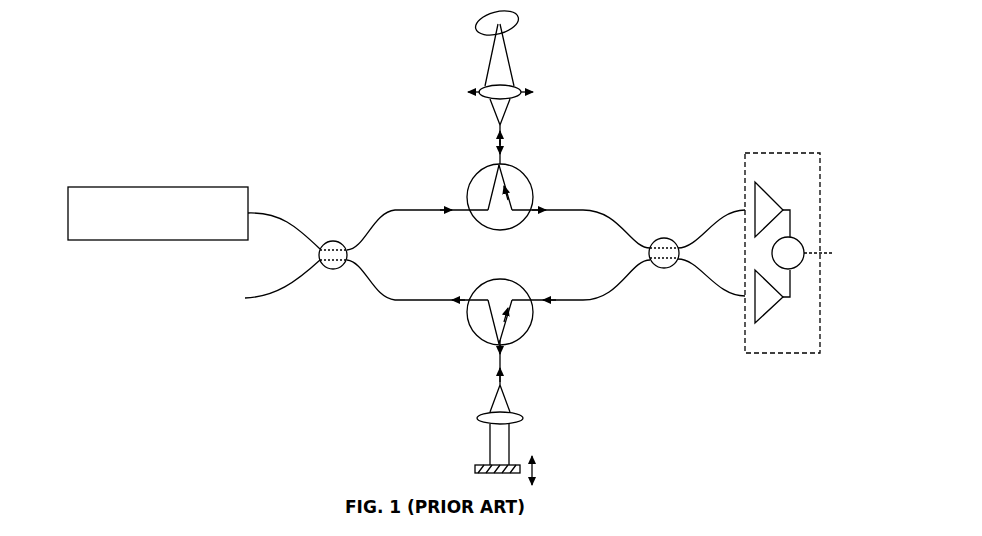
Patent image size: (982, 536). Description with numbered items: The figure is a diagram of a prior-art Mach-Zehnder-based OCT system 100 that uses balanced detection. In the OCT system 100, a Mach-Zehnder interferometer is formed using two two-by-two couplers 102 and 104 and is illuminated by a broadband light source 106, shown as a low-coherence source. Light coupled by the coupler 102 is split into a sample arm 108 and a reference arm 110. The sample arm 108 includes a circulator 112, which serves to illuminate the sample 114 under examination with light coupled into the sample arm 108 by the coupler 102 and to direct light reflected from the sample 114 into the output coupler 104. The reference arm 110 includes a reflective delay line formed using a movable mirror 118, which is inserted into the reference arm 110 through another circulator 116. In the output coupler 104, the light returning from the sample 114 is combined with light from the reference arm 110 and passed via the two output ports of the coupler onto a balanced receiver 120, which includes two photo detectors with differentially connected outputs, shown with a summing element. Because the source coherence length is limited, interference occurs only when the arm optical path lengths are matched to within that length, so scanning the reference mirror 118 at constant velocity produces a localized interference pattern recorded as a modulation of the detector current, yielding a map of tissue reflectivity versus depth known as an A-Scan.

The OCT system 100 is at (330, 92).
The coupler 102 is at (333, 272).
The output coupler 104 is at (660, 268).
The broadband light source 106 is at (174, 187).
The sample arm 108 is at (392, 203).
The reference arm 110 is at (392, 303).
The circulator 112 is at (530, 176).
The sample 114 is at (478, 31).
The circulator 116 is at (530, 337).
The movable mirror 118 is at (462, 452).
The balanced receiver 120 is at (780, 153).